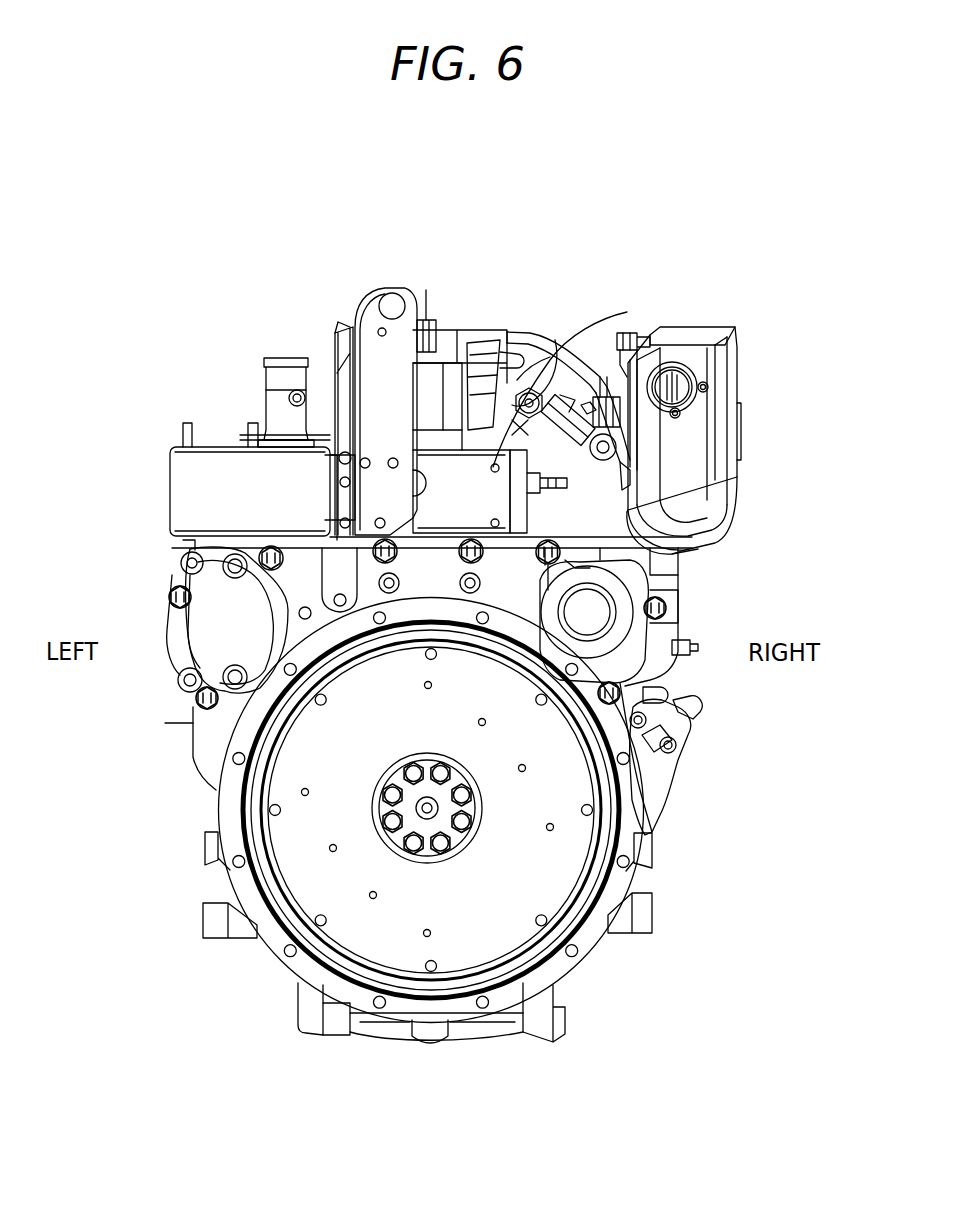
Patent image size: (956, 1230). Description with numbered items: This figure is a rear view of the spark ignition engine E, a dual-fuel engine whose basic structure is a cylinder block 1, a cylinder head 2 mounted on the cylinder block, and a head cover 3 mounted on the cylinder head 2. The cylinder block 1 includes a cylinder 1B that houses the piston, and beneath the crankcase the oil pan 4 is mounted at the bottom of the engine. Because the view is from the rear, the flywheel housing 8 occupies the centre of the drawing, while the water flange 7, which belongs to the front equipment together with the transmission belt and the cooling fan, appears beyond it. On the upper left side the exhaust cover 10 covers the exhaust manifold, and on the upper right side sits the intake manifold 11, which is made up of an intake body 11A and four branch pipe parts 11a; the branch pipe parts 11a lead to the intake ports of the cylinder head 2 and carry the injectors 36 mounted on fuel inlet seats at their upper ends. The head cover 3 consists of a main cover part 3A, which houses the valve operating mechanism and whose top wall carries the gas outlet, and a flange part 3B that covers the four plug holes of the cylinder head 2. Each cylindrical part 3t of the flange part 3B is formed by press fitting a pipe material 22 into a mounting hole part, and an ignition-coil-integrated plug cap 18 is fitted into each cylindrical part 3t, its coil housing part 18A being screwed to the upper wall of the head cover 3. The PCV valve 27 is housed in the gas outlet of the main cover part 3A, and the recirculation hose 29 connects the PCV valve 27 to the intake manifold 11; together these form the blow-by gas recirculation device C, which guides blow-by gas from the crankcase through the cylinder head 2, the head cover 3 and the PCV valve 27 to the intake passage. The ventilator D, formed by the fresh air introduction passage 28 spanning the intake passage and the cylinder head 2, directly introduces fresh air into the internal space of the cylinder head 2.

The spark ignition engine E is at (228, 338).
The cylinder block 1 is at (430, 570).
The cylinder 1B is at (433, 737).
The cylinder head 2 is at (650, 578).
The head cover 3 is at (333, 362).
The main cover part 3A is at (428, 352).
The flange part 3B is at (483, 433).
The cylindrical part 3t is at (578, 352).
The oil pan 4 is at (543, 995).
The water flange 7 is at (270, 375).
The flywheel housing 8 is at (270, 943).
The exhaust cover 10 is at (183, 495).
The intake manifold 11 is at (735, 505).
The intake body 11A is at (720, 434).
The branch pipe part 11a is at (658, 538).
The ignition-coil-integrated plug cap 18 is at (495, 345).
The coil housing part 18A is at (516, 318).
The pipe material 22 is at (608, 357).
The PCV valve 27 is at (440, 350).
The fresh air introduction passage 28 is at (678, 346).
The recirculation hose 29 is at (562, 320).
The injector 36 is at (700, 333).
The blow-by gas recirculation device C is at (545, 360).
The ventilator D is at (583, 378).